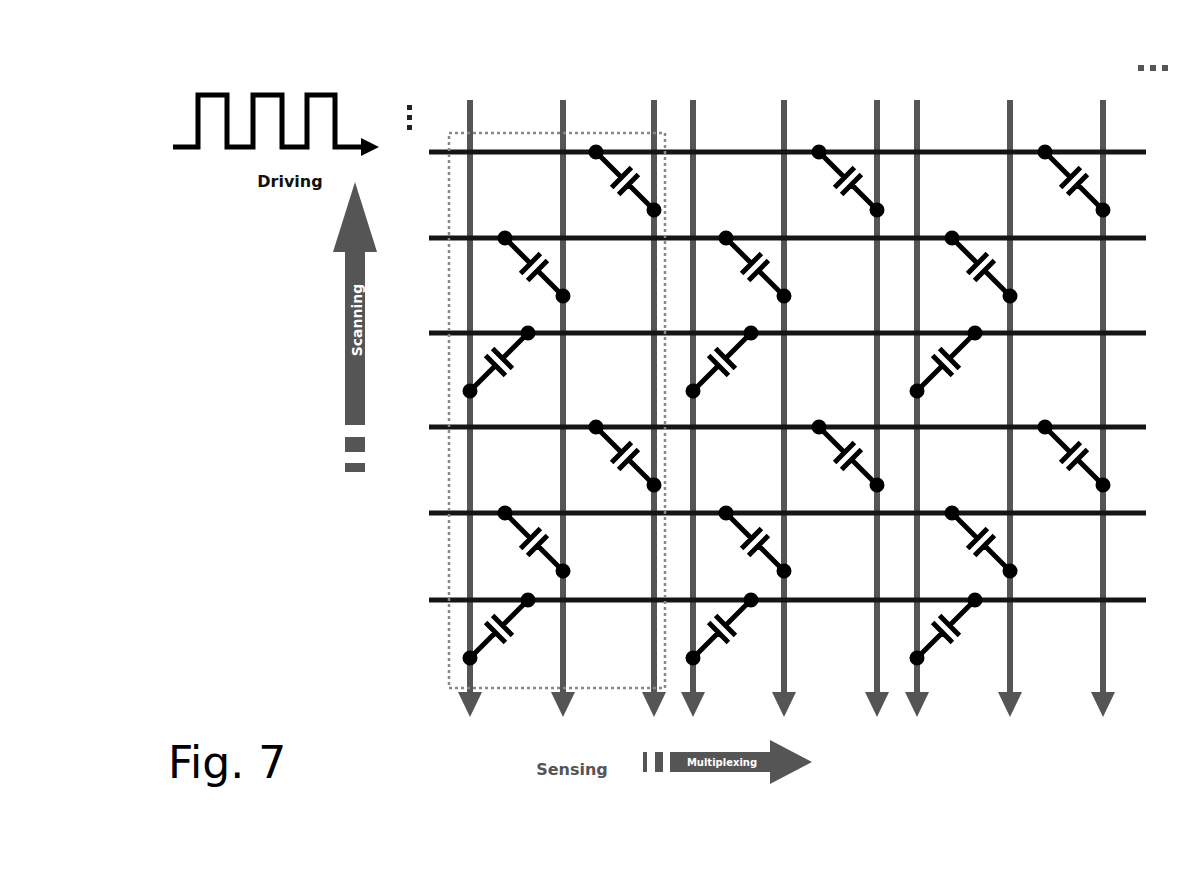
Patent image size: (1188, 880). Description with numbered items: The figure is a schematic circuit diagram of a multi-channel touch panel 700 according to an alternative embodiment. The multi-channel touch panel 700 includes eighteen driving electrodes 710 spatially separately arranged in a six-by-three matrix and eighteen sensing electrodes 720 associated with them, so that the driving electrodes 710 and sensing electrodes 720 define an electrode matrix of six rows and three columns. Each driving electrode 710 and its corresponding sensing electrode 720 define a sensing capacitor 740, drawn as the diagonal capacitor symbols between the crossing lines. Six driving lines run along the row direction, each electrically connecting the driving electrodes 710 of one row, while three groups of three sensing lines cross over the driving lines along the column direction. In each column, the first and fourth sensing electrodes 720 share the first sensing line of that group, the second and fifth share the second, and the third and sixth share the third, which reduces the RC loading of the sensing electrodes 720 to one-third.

The multi-channel touch panel 700 is at (705, 36).
The driving electrode 710 is at (528, 598).
The sensing electrode 720 is at (471, 659).
The sensing capacitor 740 is at (513, 646).